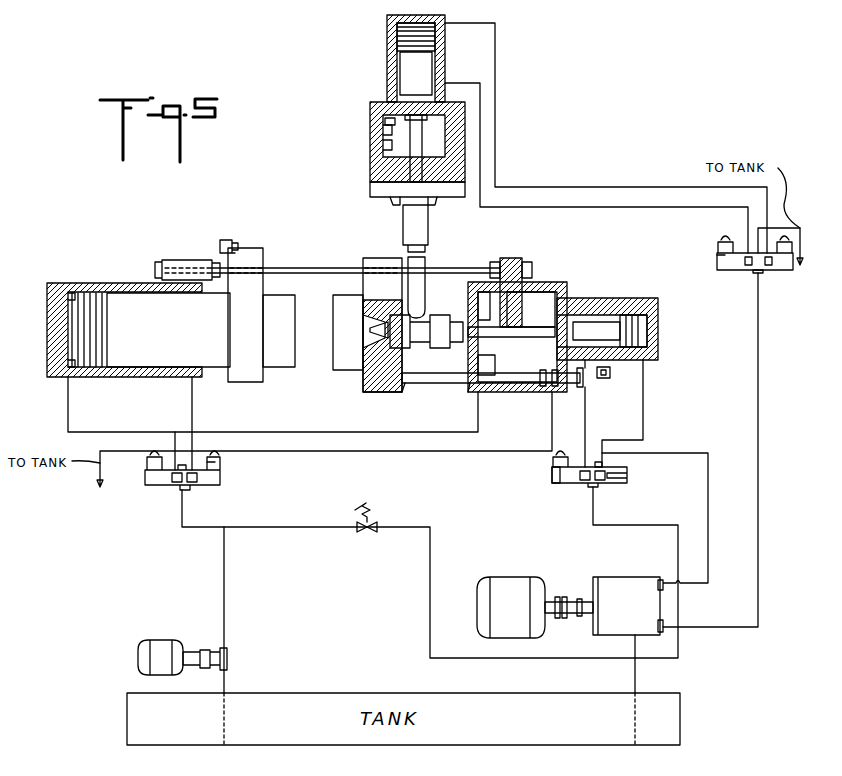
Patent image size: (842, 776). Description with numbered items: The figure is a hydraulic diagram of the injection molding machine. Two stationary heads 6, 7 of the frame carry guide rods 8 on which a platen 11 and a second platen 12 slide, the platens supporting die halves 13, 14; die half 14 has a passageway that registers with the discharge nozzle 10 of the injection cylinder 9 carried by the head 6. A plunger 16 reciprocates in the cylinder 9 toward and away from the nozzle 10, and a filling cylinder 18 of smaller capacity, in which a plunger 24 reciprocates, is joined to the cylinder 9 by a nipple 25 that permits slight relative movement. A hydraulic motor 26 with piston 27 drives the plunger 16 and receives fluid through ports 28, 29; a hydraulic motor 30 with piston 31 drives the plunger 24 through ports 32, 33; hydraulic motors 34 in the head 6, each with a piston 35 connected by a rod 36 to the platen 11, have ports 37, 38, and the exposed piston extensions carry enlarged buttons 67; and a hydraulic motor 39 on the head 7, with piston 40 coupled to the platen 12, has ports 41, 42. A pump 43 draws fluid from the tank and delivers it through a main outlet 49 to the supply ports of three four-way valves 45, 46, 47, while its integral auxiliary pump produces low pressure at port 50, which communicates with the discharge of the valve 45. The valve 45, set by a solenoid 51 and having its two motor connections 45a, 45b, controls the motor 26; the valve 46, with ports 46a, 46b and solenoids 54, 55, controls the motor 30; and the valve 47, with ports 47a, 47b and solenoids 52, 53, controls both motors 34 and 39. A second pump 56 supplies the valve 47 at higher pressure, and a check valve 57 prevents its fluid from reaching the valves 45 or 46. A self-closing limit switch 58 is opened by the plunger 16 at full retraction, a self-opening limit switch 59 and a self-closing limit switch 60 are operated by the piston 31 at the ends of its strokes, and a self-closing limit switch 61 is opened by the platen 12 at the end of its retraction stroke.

The stationary head 6 is at (548, 282).
The stationary head 7 is at (180, 260).
The guide rods 8 is at (303, 268).
The injection cylinder 9 is at (432, 342).
The discharge nozzle 10 is at (370, 330).
The platen 11 is at (385, 392).
The second platen 12 is at (245, 382).
The die half 13 is at (280, 367).
The die half 14 is at (350, 370).
The plunger 16 is at (540, 327).
The filling cylinder 18 is at (430, 228).
The plunger 24 is at (416, 136).
The nipple 25 is at (420, 290).
The hydraulic motor 26 is at (590, 298).
The piston 27 is at (647, 330).
The port 28 is at (586, 360).
The port 29 is at (650, 360).
The hydraulic motor 30 is at (445, 50).
The piston 31 is at (410, 68).
The port 32 is at (446, 83).
The port 33 is at (440, 18).
The hydraulic motor 34 is at (490, 392).
The piston 35 is at (530, 392).
The rod 36 is at (487, 345).
The port 37 is at (470, 392).
The port 38 is at (580, 387).
The hydraulic motor 39 is at (50, 283).
The piston 40 is at (140, 340).
The port 41 is at (66, 378).
The port 42 is at (190, 380).
The pump 43 is at (618, 588).
The four-way valve 45 is at (565, 483).
The solenoid 45a is at (585, 485).
The solenoid 45b is at (605, 483).
The four-way valve 46 is at (740, 270).
The port 46a is at (748, 257).
The port 46b is at (770, 270).
The four-way valve 47 is at (215, 485).
The port 47a is at (176, 485).
The port 47b is at (192, 485).
The main outlet 49 is at (665, 632).
The port 50 is at (660, 577).
The solenoid 51 is at (552, 472).
The solenoid 52 is at (215, 468).
The solenoid 53 is at (145, 470).
The solenoid 54 is at (717, 258).
The solenoid 55 is at (790, 270).
The second pump 56 is at (165, 640).
The check valve 57 is at (372, 520).
The self-closing limit switch 58 is at (608, 375).
The self-opening limit switch 59 is at (370, 145).
The self-closing limit switch 60 is at (385, 121).
The self-closing limit switch 61 is at (228, 240).
The button 67 is at (585, 420).